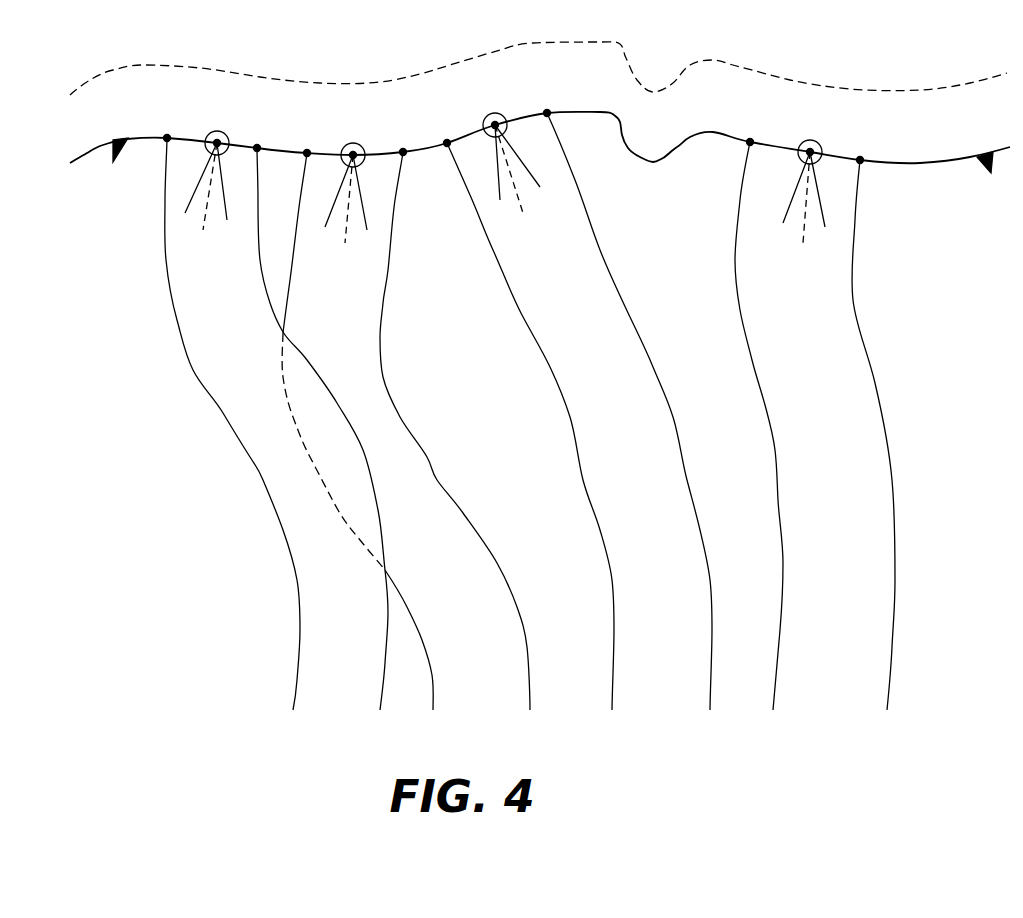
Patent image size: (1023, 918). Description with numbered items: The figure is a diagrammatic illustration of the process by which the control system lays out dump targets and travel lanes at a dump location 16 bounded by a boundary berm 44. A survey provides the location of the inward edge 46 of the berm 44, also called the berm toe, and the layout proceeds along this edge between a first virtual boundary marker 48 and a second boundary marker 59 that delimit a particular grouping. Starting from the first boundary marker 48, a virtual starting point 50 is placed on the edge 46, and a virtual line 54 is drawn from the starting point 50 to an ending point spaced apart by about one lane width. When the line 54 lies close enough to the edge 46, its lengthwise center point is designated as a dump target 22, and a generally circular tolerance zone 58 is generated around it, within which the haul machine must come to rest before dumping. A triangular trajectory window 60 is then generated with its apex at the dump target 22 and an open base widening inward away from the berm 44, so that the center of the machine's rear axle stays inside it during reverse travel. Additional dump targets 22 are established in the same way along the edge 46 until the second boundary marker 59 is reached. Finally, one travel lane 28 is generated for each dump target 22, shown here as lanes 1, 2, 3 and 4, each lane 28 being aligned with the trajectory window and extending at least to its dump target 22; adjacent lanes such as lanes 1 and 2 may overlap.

The dump location 16 is at (955, 341).
The dump target 22 is at (208, 130).
The travel lane 28 is at (327, 644).
The boundary berm 44 is at (99, 126).
The inward edge 46 is at (92, 156).
The first virtual boundary marker 48 is at (123, 154).
The virtual starting point 50 is at (167, 136).
The virtual line 54 is at (257, 146).
The tolerance zone 58 is at (228, 138).
The second boundary marker 59 is at (983, 175).
The trajectory window 60 is at (221, 163).
The lane 1 is at (205, 250).
The lane 2 is at (342, 263).
The lane 3 is at (528, 228).
The lane 4 is at (800, 261).